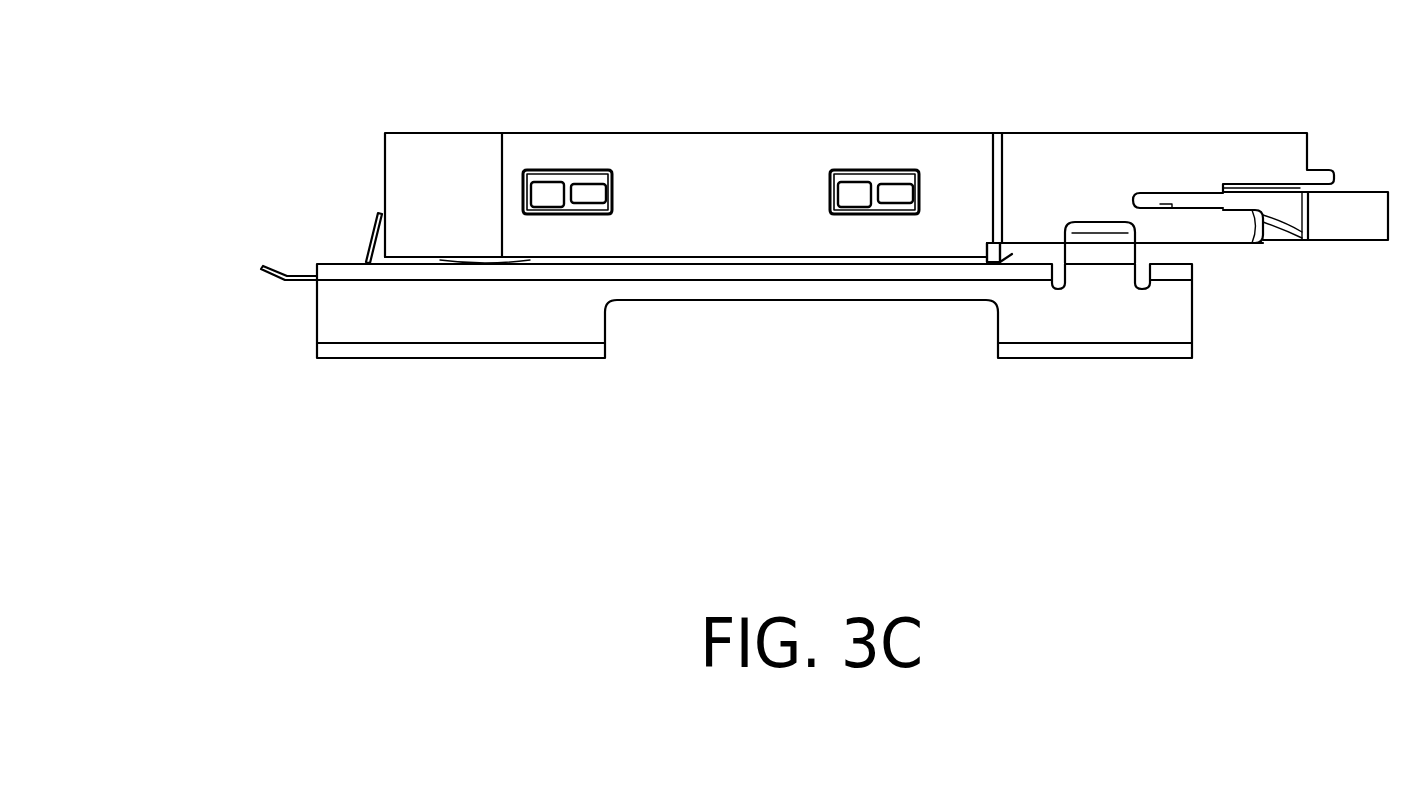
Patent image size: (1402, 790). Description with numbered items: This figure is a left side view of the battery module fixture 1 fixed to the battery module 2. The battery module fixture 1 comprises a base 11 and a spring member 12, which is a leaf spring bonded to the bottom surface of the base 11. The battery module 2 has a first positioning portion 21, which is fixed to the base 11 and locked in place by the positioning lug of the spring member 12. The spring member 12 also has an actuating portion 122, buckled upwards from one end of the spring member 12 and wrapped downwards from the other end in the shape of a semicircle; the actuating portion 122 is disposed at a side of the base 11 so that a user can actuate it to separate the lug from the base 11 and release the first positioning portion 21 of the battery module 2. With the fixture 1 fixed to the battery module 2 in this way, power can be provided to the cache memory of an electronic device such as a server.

The battery module fixture 1 is at (632, 402).
The base 11 is at (468, 347).
The spring member 12 is at (195, 351).
The actuating portion 122 is at (285, 280).
The battery module 2 is at (672, 173).
The first positioning portion 21 is at (373, 232).